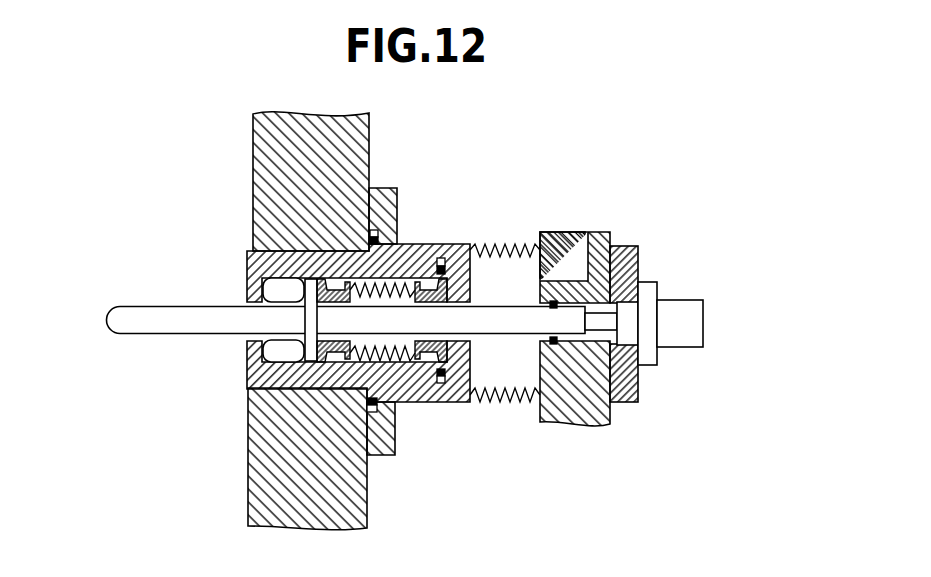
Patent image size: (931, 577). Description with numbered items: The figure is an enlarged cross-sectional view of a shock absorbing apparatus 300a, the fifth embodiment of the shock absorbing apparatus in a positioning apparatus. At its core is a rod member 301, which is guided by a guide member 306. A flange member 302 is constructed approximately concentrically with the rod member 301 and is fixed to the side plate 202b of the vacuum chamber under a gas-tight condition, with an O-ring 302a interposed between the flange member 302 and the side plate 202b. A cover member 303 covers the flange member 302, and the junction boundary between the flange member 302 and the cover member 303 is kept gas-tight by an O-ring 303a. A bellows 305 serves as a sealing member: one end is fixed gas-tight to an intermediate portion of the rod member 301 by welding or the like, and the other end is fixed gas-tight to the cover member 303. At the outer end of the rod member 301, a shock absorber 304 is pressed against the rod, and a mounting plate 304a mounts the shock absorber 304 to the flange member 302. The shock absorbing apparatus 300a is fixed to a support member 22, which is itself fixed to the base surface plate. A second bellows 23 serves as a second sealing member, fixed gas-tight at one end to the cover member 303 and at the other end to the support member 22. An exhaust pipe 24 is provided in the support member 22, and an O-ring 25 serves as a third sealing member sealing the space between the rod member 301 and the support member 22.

The flange member 302 is at (258, 250).
The O-ring 302a is at (372, 238).
The guide member 306 is at (277, 291).
The rod member 301 is at (125, 318).
The cover member 303 is at (472, 265).
The O-ring 303a is at (440, 262).
The bellows 305 is at (393, 362).
The shock absorbing apparatus 300a is at (232, 405).
The bellows 23 is at (502, 403).
The support member 22 is at (573, 405).
The exhaust pipe 24 is at (583, 262).
The O-ring 25 is at (553, 302).
The shock absorber 304 is at (688, 325).
The mounting plate 304a is at (625, 380).
The side plate 202b is at (267, 467).